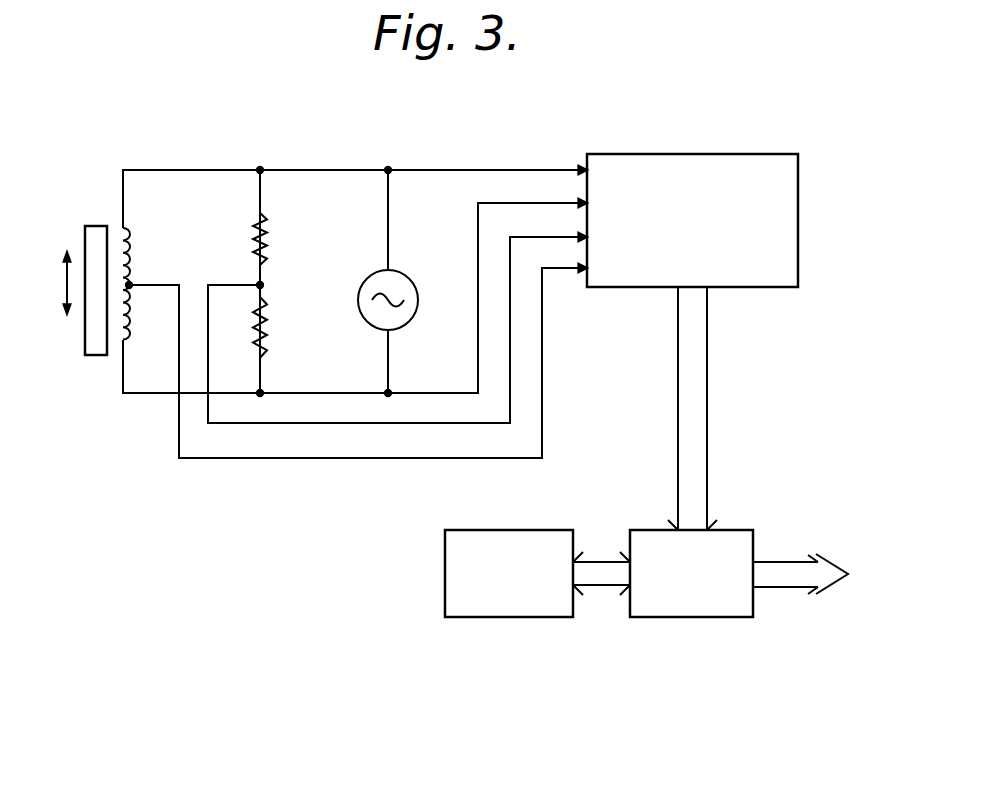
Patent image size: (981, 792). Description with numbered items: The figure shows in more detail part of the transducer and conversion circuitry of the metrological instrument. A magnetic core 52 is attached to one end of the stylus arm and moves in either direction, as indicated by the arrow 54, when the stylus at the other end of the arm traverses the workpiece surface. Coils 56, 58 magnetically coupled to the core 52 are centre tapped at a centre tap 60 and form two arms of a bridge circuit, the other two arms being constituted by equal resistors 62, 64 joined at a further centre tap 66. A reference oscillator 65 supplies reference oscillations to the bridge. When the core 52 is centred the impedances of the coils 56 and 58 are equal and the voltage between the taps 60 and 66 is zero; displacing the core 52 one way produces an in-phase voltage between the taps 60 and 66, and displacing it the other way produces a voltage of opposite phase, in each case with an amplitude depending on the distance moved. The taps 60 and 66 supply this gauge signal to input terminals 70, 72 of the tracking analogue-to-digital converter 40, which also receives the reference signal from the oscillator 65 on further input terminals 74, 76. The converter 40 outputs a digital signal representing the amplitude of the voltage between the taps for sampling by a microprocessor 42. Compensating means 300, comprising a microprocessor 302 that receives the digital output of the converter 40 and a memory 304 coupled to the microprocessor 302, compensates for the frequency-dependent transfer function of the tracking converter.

The analogue-to-digital converter 40 is at (798, 237).
The microprocessor 42 is at (814, 574).
The magnetic core 52 is at (85, 344).
The arrow 54 is at (65, 284).
The coil 56 is at (131, 251).
The coil 58 is at (132, 312).
The centre tap 60 is at (131, 284).
The resistor 62 is at (270, 252).
The resistor 64 is at (272, 337).
The reference oscillator 65 is at (410, 279).
The centre tap 66 is at (264, 285).
The input terminal 70 is at (584, 238).
The input terminal 72 is at (584, 272).
The input terminal 74 is at (584, 167).
The input terminal 76 is at (584, 203).
The compensating means 300 is at (594, 645).
The microprocessor 302 is at (688, 617).
The memory 304 is at (500, 617).